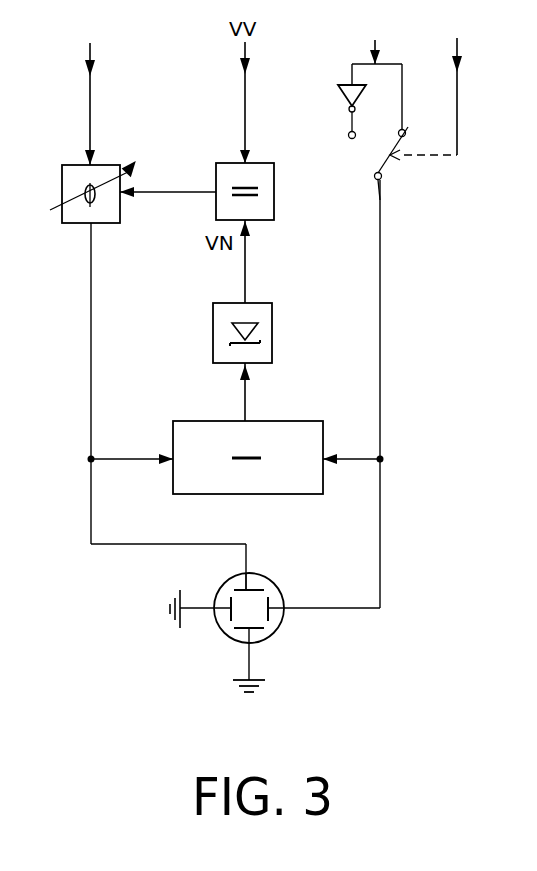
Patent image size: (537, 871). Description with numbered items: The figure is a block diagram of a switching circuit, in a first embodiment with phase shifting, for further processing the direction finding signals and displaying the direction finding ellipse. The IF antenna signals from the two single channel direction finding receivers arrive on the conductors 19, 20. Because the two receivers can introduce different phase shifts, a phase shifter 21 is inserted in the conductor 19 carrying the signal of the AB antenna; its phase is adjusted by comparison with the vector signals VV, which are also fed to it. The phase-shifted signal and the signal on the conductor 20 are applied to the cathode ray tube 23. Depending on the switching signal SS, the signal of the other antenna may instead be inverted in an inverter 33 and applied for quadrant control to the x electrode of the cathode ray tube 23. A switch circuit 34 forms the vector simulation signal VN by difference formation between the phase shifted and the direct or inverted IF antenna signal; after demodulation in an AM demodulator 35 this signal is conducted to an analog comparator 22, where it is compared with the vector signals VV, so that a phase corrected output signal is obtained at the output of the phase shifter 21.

The conductor 19 is at (90, 110).
The conductor 20 is at (372, 52).
The phase shifter 21 is at (64, 223).
The analog comparator 22 is at (262, 221).
The cathode ray tube 23 is at (276, 633).
The inverter 33 is at (342, 92).
The switch circuit 34 is at (293, 494).
The AM demodulator 35 is at (272, 306).